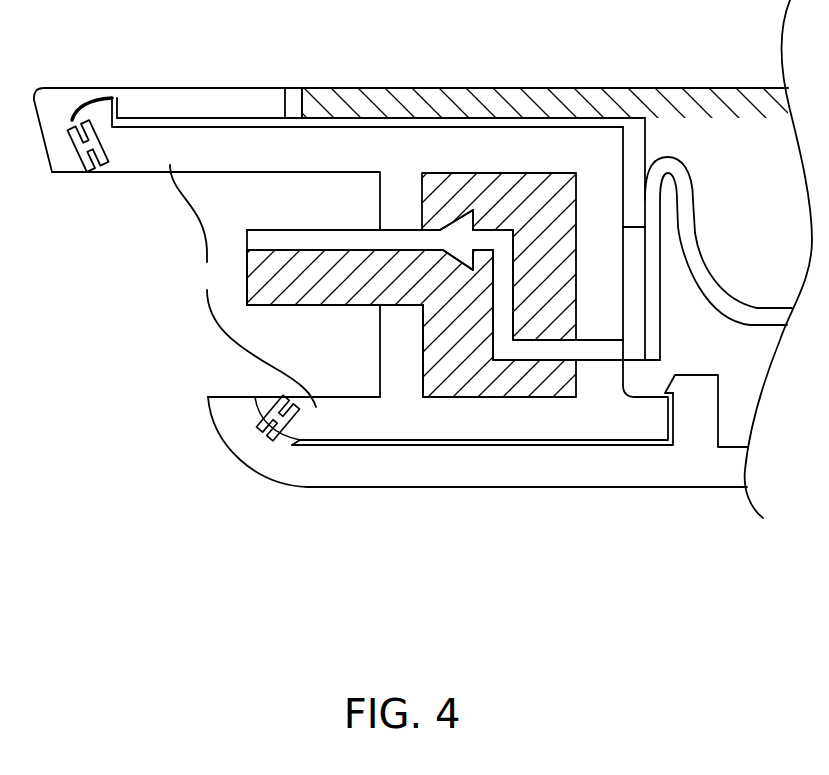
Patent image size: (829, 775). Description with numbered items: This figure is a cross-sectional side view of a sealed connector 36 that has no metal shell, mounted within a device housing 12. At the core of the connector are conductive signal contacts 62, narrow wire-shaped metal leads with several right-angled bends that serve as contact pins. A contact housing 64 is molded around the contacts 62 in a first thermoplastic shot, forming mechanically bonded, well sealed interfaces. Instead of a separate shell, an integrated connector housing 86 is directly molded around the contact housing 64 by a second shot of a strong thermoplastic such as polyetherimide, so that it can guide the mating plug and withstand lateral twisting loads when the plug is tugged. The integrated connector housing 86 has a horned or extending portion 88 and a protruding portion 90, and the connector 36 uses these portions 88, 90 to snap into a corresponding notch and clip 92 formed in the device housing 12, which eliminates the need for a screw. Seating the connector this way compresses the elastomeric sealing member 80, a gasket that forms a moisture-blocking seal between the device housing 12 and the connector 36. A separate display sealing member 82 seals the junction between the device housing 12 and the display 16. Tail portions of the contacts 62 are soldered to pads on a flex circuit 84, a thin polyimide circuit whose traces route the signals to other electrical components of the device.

The device housing 12 is at (180, 97).
The display 16 is at (692, 98).
The sealed connector 36 is at (110, 292).
The conductive signal contacts 62 is at (503, 297).
The contact housing 64 is at (523, 217).
The sealing member 80 is at (87, 157).
The display sealing member 82 is at (292, 98).
The flex circuit 84 is at (693, 255).
The integrated connector housing 86 is at (243, 286).
The horned portion 88 is at (95, 103).
The protruding portion 90 is at (653, 420).
The notch and clip 92 is at (692, 405).